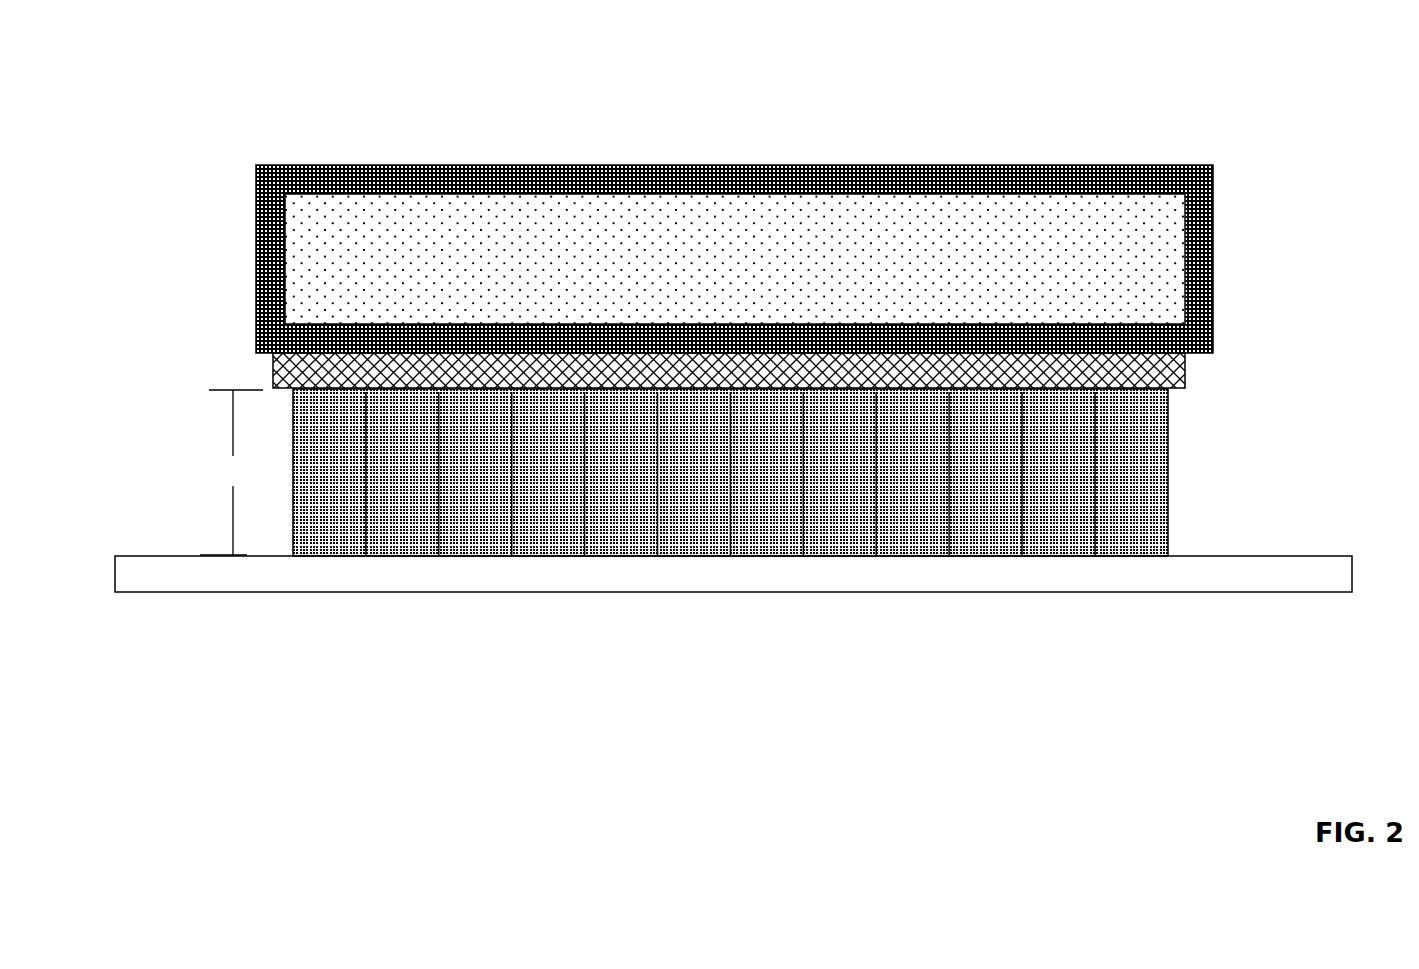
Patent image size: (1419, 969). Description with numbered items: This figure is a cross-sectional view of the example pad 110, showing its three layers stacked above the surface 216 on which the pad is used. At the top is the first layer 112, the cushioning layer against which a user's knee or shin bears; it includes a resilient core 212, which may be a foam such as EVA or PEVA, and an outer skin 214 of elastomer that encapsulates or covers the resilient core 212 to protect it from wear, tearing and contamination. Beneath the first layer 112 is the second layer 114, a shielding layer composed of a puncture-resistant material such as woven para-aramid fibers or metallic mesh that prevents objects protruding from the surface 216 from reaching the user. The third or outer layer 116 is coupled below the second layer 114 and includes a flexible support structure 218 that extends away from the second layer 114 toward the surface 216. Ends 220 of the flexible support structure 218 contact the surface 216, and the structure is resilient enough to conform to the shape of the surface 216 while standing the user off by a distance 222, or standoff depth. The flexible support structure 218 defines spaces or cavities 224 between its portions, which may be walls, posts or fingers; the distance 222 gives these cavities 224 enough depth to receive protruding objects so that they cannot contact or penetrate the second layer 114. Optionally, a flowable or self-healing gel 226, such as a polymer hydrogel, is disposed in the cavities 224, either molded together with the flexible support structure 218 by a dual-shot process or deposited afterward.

The pad 110 is at (361, 113).
The first layer 112 is at (601, 165).
The second layer 114 is at (1178, 371).
The third layer 116 is at (1168, 408).
The resilient core 212 is at (755, 268).
The outer skin 214 is at (1058, 175).
The surface 216 is at (182, 555).
The flexible support structure 218 is at (1212, 486).
The ends 220 is at (355, 557).
The distance 222 is at (231, 472).
The spaces or cavities 224 is at (713, 502).
The gel 226 is at (1155, 513).